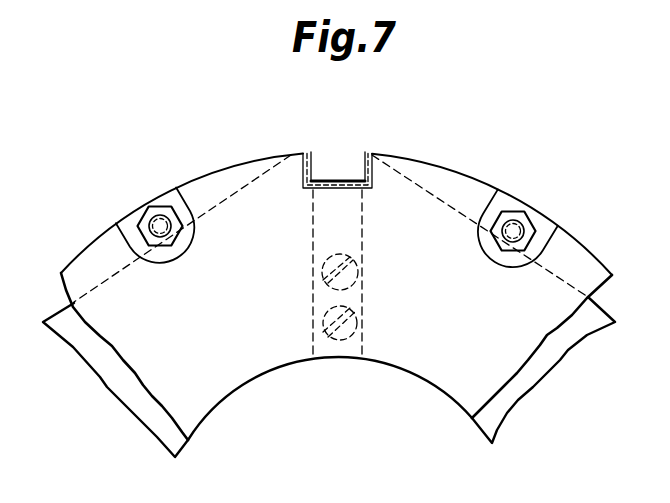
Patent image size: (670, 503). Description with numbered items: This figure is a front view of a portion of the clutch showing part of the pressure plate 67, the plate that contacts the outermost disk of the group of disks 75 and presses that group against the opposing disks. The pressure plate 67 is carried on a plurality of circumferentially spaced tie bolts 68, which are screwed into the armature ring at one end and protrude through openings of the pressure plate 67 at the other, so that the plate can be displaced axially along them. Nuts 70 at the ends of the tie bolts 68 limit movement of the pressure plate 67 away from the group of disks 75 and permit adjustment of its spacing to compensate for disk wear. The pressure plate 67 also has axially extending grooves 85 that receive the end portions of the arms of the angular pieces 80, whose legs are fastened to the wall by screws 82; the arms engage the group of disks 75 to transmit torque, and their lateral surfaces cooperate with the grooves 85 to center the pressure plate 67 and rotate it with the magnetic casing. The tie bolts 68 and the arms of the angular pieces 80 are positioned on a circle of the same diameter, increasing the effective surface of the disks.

The pressure plate 67 is at (268, 360).
The tie bolts 68 is at (160, 222).
The nuts 70 is at (531, 212).
The group of disks 75 is at (155, 422).
The angular pieces 80 is at (325, 152).
The screws 82 is at (358, 320).
The axially extending grooves 85 is at (367, 153).